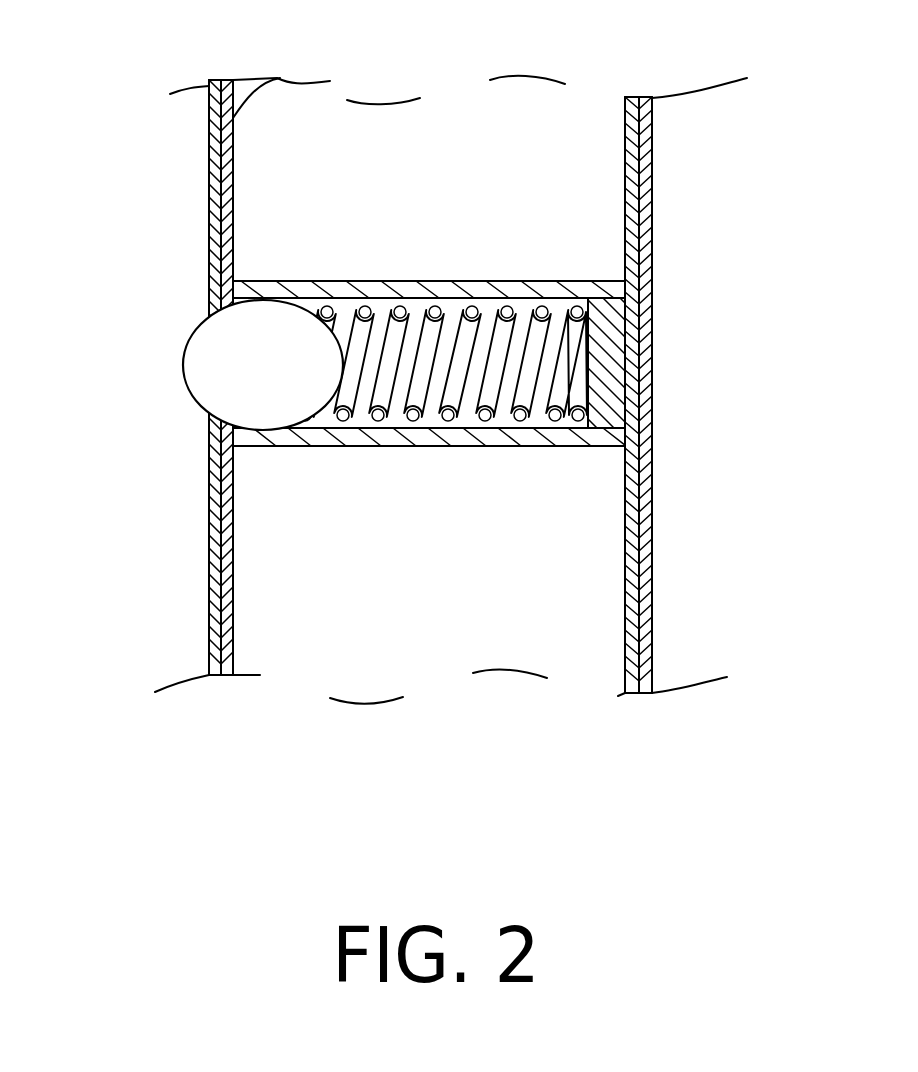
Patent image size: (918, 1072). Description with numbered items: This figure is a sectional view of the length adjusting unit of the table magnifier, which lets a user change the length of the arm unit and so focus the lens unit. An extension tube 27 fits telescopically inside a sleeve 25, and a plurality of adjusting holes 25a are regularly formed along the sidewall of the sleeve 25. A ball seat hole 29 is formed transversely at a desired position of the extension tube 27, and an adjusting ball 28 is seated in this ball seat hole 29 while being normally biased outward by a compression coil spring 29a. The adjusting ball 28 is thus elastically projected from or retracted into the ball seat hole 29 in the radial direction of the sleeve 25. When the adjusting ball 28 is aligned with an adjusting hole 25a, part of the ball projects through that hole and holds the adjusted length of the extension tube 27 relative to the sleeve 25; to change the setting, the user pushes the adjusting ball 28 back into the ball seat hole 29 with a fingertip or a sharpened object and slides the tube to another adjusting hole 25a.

The sleeve 25 is at (207, 257).
The adjusting hole 25a is at (207, 118).
The extension tube 27 is at (330, 81).
The adjusting ball 28 is at (205, 378).
The ball seat hole 29 is at (487, 279).
The compression coil spring 29a is at (545, 425).